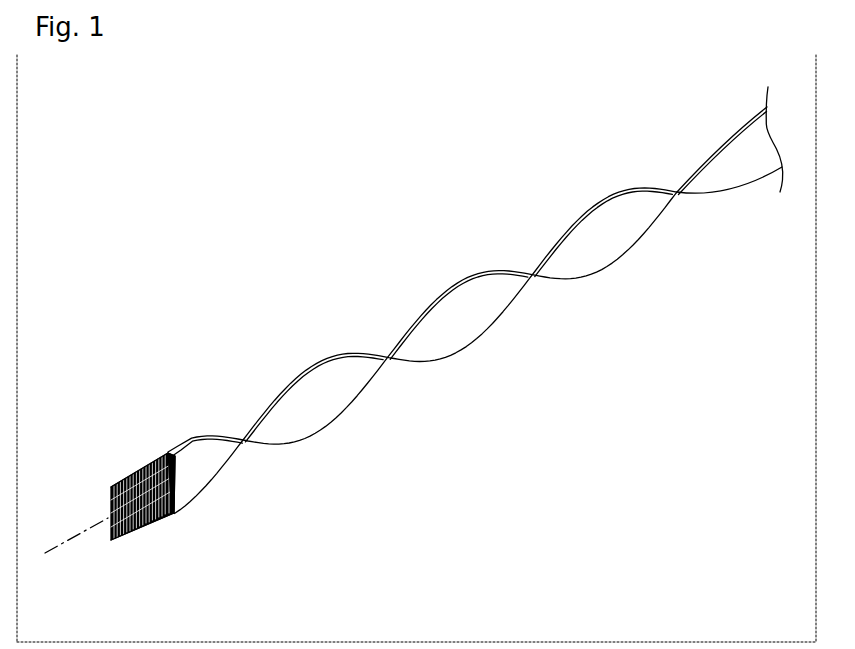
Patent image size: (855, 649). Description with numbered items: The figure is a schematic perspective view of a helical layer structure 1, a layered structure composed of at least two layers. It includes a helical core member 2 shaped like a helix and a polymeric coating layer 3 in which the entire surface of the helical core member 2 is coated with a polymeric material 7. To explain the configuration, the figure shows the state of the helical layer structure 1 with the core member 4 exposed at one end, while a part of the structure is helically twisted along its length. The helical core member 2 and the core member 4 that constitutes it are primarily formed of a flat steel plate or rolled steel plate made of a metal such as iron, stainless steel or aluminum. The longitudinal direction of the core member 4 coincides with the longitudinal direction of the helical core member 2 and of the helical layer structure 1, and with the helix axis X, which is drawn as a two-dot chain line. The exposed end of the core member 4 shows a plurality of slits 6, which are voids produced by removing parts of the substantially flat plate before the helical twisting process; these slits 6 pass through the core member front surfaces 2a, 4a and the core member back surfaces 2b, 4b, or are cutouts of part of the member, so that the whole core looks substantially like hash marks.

The helical layer structure 1 is at (275, 205).
The helical core member 2 is at (113, 488).
The core member 4 is at (151, 494).
The core member front surface 2a is at (130, 538).
The core member front surface 4a is at (175, 563).
The core member back surface 2b is at (152, 454).
The core member back surface 4b is at (165, 431).
The polymeric coating layer 3 is at (325, 416).
The polymeric material 7 is at (475, 300).
The slits 6 is at (148, 527).
The helix axis X is at (73, 533).